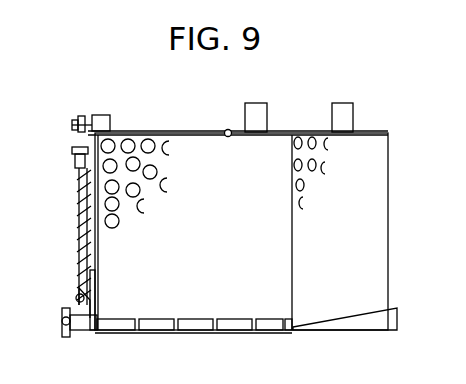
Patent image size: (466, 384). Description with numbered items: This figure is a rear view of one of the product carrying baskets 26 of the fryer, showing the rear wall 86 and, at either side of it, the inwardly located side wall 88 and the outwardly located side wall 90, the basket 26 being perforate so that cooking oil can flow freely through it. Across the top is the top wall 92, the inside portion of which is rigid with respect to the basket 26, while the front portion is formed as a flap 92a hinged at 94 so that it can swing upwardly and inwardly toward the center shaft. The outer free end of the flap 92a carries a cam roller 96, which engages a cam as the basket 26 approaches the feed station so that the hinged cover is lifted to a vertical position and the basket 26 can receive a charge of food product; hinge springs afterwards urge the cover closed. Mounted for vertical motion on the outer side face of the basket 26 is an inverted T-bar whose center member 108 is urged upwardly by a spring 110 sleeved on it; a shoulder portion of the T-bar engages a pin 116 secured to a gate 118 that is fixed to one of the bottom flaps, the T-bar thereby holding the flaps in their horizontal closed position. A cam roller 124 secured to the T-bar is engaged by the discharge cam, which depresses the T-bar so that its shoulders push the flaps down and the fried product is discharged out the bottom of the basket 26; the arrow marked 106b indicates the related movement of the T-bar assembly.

The basket 26 is at (193, 340).
The rear wall 86 is at (216, 246).
The inwardly located side wall 88 is at (388, 242).
The outwardly located side wall 90 is at (74, 145).
The top wall 92 is at (290, 131).
The flap 92a is at (151, 131).
The hinge 94 is at (229, 129).
The cam roller 96 is at (80, 117).
The slot 106b is at (70, 279).
The center member 108 is at (76, 242).
The spring 110 is at (80, 198).
The pin 116 is at (88, 292).
The gate 118 is at (97, 284).
The cam roller 124 is at (64, 326).